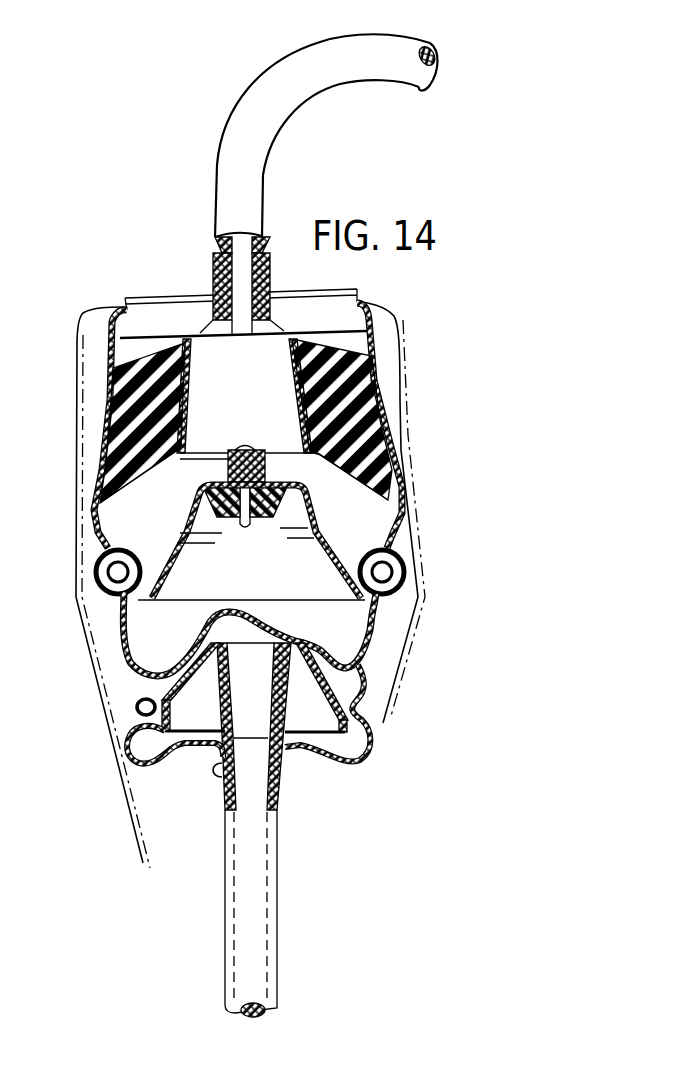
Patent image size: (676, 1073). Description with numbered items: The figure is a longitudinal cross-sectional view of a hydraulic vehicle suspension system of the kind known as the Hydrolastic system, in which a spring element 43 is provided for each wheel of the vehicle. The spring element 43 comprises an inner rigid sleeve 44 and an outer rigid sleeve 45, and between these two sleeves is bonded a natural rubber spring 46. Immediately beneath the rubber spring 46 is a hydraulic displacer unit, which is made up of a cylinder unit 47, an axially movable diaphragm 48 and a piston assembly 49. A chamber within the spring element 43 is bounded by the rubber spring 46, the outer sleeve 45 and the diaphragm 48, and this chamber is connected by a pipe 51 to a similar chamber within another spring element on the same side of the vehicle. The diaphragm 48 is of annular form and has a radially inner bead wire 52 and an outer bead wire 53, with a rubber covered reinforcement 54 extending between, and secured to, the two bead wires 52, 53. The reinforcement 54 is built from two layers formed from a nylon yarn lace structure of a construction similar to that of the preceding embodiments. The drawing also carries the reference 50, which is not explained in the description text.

The spring element 43 is at (93, 298).
The inner rigid sleeve 44 is at (192, 383).
The outer rigid sleeve 45 is at (107, 396).
The natural rubber spring 46 is at (113, 453).
The cylinder unit 47 is at (362, 680).
The axially movable diaphragm 48 is at (360, 645).
The piston assembly 49 is at (288, 703).
The support plate and bolt 50 is at (244, 488).
The pipe 51 is at (307, 90).
The radially inner bead wire 52 is at (236, 610).
The outer bead wire 53 is at (128, 553).
The rubber covered reinforcement 54 is at (312, 605).